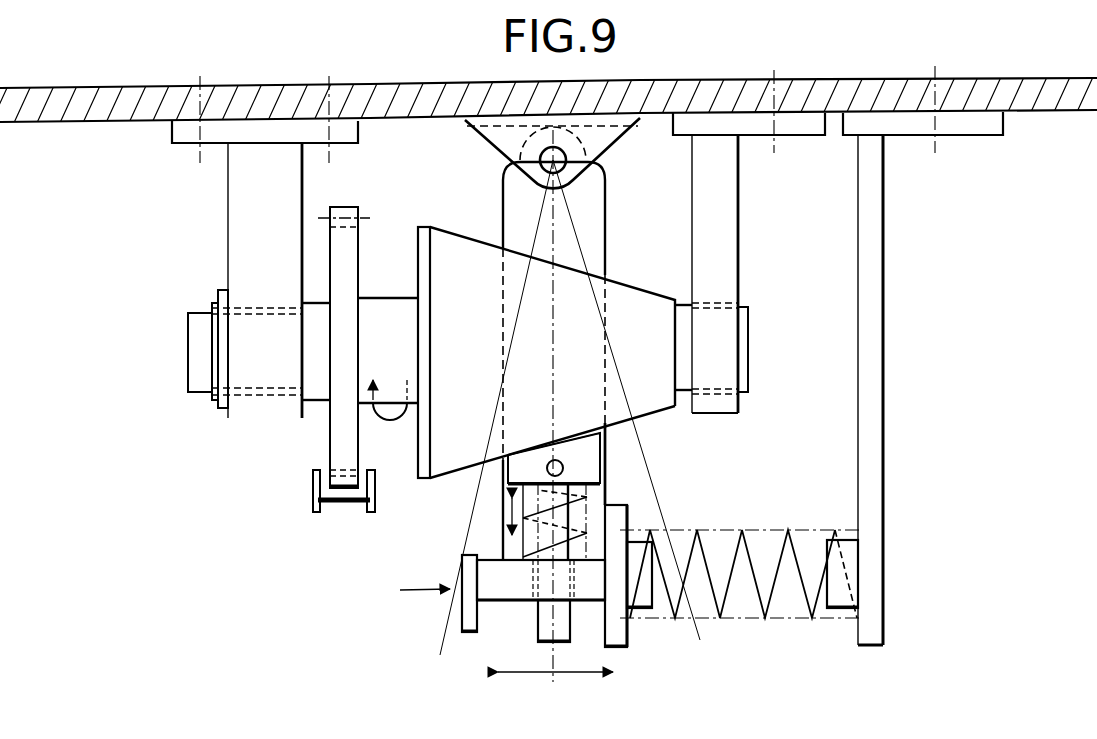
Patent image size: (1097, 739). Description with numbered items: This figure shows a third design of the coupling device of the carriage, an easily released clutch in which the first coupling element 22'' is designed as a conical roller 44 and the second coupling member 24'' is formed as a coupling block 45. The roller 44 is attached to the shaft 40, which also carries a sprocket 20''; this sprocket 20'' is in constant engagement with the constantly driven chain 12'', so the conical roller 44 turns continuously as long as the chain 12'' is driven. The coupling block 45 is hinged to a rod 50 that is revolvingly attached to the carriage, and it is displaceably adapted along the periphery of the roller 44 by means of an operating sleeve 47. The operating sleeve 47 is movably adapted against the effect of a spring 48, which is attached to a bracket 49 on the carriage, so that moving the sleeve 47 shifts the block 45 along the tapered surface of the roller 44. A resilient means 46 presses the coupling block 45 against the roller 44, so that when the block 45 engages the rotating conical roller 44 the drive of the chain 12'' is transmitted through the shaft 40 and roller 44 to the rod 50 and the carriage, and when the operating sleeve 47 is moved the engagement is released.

The shaft 40 is at (197, 343).
The sprocket 20'' is at (309, 347).
The constantly driven chain 12'' is at (335, 525).
The conical roller 44 is at (450, 405).
The first coupling element 22'' is at (549, 465).
The rod 50 is at (588, 220).
The second coupling member 24'' is at (661, 464).
The coupling block 45 is at (582, 465).
The resilient means 46 is at (577, 532).
The operating sleeve 47 is at (500, 592).
The spring 48 is at (737, 610).
The bracket 49 is at (873, 628).